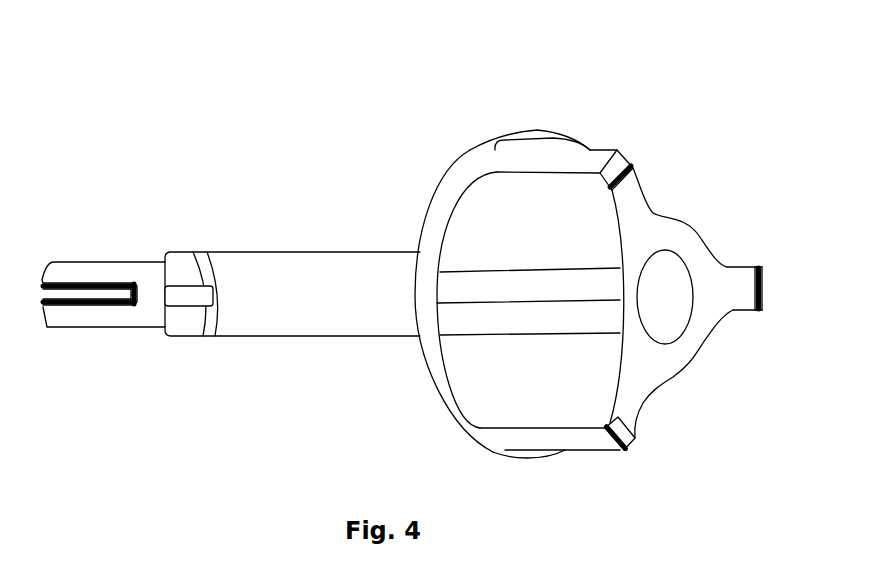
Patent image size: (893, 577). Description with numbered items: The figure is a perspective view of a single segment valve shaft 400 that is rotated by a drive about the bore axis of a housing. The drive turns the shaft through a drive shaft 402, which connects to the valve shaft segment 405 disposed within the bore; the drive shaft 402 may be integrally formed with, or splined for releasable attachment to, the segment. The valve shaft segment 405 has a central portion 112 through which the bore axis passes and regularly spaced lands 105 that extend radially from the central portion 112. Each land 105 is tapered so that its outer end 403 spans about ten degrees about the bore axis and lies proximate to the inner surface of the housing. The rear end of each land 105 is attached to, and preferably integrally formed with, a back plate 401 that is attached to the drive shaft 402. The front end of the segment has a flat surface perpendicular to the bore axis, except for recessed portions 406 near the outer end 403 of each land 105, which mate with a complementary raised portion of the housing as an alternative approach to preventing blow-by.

The single segment valve shaft 400 is at (207, 117).
The back plate 401 is at (440, 195).
The drive shaft 402 is at (268, 310).
The outer end of land 403 is at (555, 160).
The valve shaft segment 405 is at (777, 90).
The land 105 is at (628, 187).
The recessed portion 406 is at (622, 437).
The central portion 112 is at (683, 350).